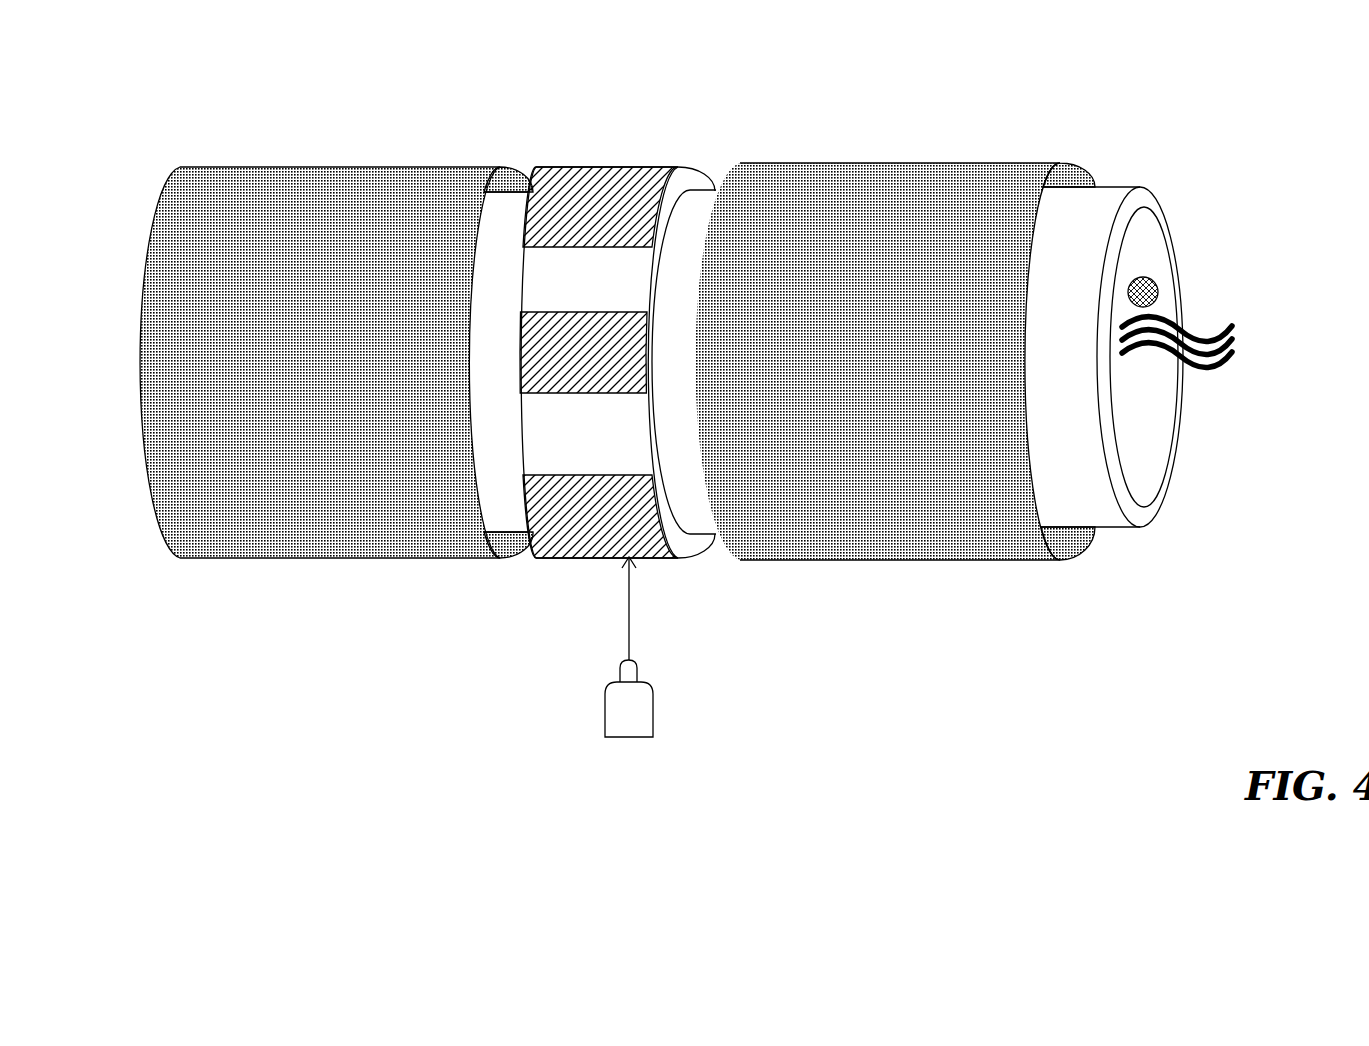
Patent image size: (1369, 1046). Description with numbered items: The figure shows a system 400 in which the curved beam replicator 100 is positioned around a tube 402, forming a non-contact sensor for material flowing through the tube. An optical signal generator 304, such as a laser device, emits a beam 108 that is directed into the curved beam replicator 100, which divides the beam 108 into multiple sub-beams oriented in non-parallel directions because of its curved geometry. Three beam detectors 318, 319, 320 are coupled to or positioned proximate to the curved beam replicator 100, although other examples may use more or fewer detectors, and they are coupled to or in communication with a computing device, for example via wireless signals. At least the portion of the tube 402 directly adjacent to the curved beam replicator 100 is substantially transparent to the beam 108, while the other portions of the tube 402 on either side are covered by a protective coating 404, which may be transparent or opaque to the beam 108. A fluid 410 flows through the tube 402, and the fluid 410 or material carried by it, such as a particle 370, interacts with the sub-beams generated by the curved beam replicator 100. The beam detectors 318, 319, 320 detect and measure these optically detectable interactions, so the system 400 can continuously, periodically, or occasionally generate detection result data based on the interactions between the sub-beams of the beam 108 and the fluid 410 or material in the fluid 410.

The system 400 is at (88, 50).
The protective coating 404 is at (212, 166).
The curved beam replicator 100 is at (603, 144).
The beam detector 320 is at (585, 217).
The beam detector 319 is at (566, 375).
The beam detector 318 is at (585, 528).
The tube 402 is at (1115, 186).
The particle 370 is at (1157, 288).
The fluid 410 is at (1231, 325).
The beam 108 is at (628, 598).
The optical signal generator 304 is at (605, 712).